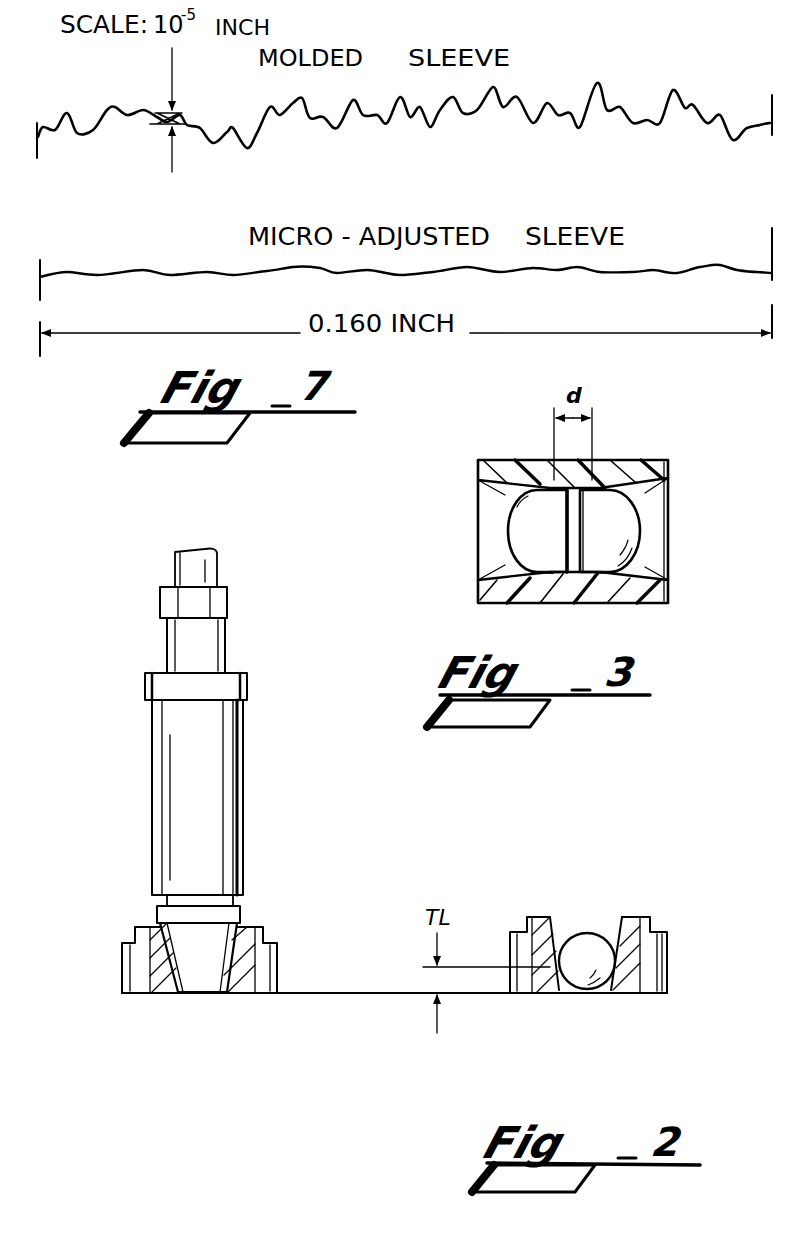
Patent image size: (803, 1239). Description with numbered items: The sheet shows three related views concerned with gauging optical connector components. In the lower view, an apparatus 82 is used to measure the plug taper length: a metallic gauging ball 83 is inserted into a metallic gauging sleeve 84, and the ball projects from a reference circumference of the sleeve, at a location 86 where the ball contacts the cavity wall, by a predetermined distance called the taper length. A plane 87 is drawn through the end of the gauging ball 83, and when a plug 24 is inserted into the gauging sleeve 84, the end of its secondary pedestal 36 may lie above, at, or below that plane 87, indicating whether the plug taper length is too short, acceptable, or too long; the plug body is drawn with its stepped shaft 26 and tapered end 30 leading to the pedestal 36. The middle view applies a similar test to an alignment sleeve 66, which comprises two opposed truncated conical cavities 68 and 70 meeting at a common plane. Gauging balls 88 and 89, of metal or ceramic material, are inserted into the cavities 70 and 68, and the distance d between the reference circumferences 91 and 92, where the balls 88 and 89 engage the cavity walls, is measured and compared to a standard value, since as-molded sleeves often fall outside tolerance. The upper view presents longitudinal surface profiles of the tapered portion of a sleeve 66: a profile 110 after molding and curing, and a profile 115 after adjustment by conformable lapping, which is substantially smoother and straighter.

In FIG. 7, the profile 110 is at (605, 92).
In FIG. 7, the profile 115 is at (650, 268).
In FIG. 3, the alignment sleeve 66 is at (635, 460).
In FIG. 3, the conically shaped cavity 68 is at (647, 567).
In FIG. 3, the conically shaped cavity 70 is at (492, 553).
In FIG. 3, the gauging ball 88 is at (527, 513).
In FIG. 3, the gauging ball 89 is at (618, 520).
In FIG. 3, the reference circumference 91 is at (553, 573).
In FIG. 3, the reference circumference 92 is at (597, 573).
In FIG. 2, the plug 24 is at (203, 722).
In FIG. 2, the pin body 26 is at (207, 812).
In FIG. 2, the tapered plug 30 is at (200, 948).
In FIG. 2, the secondary pedestal 36 is at (200, 997).
In FIG. 2, the apparatus 82 is at (553, 879).
In FIG. 2, the gauging ball 83 is at (588, 948).
In FIG. 2, the gauging sleeve 84 is at (547, 940).
In FIG. 2, the location 86 is at (615, 963).
In FIG. 2, the plane 87 is at (326, 993).